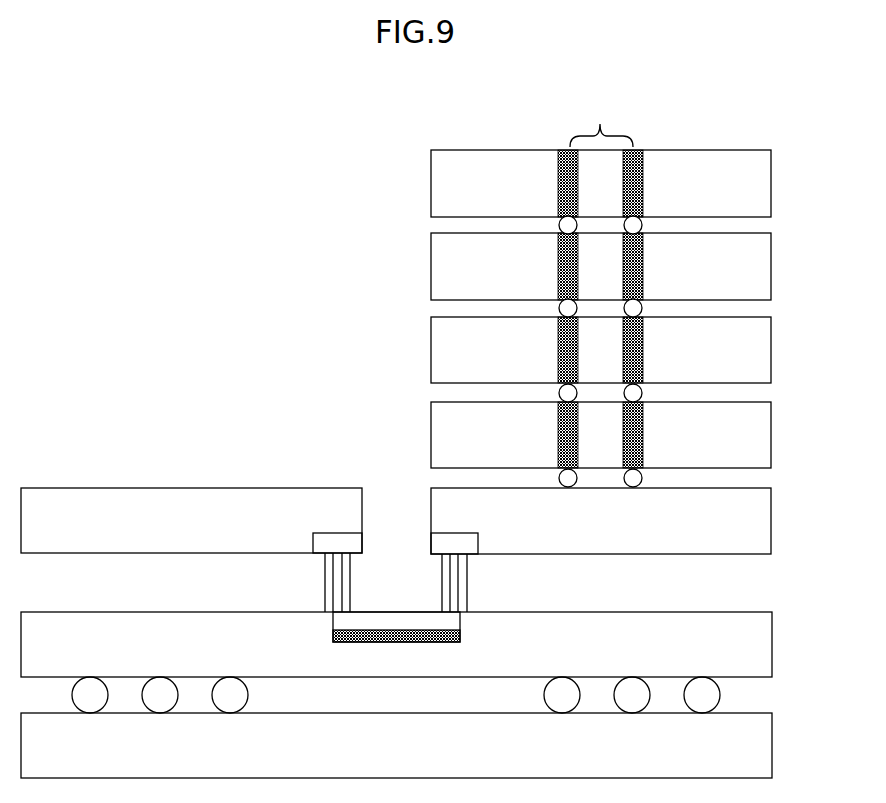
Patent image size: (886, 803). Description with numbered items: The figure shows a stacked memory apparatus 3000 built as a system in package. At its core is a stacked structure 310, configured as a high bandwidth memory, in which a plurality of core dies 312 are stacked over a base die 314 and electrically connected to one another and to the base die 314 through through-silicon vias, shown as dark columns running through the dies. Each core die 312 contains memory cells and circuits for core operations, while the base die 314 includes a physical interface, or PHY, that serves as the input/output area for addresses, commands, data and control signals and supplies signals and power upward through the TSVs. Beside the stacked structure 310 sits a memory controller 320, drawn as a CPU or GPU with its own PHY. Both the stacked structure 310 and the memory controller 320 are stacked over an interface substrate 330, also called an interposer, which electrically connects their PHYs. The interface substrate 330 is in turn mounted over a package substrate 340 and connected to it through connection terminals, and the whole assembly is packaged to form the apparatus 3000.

The stacked memory apparatus 3000 is at (714, 83).
The stacked structure 310 is at (777, 158).
The core dies 312 is at (430, 343).
The base die 314 is at (773, 551).
The memory controller 320 is at (333, 488).
The interface substrate 330 is at (773, 646).
The package substrate 340 is at (773, 770).